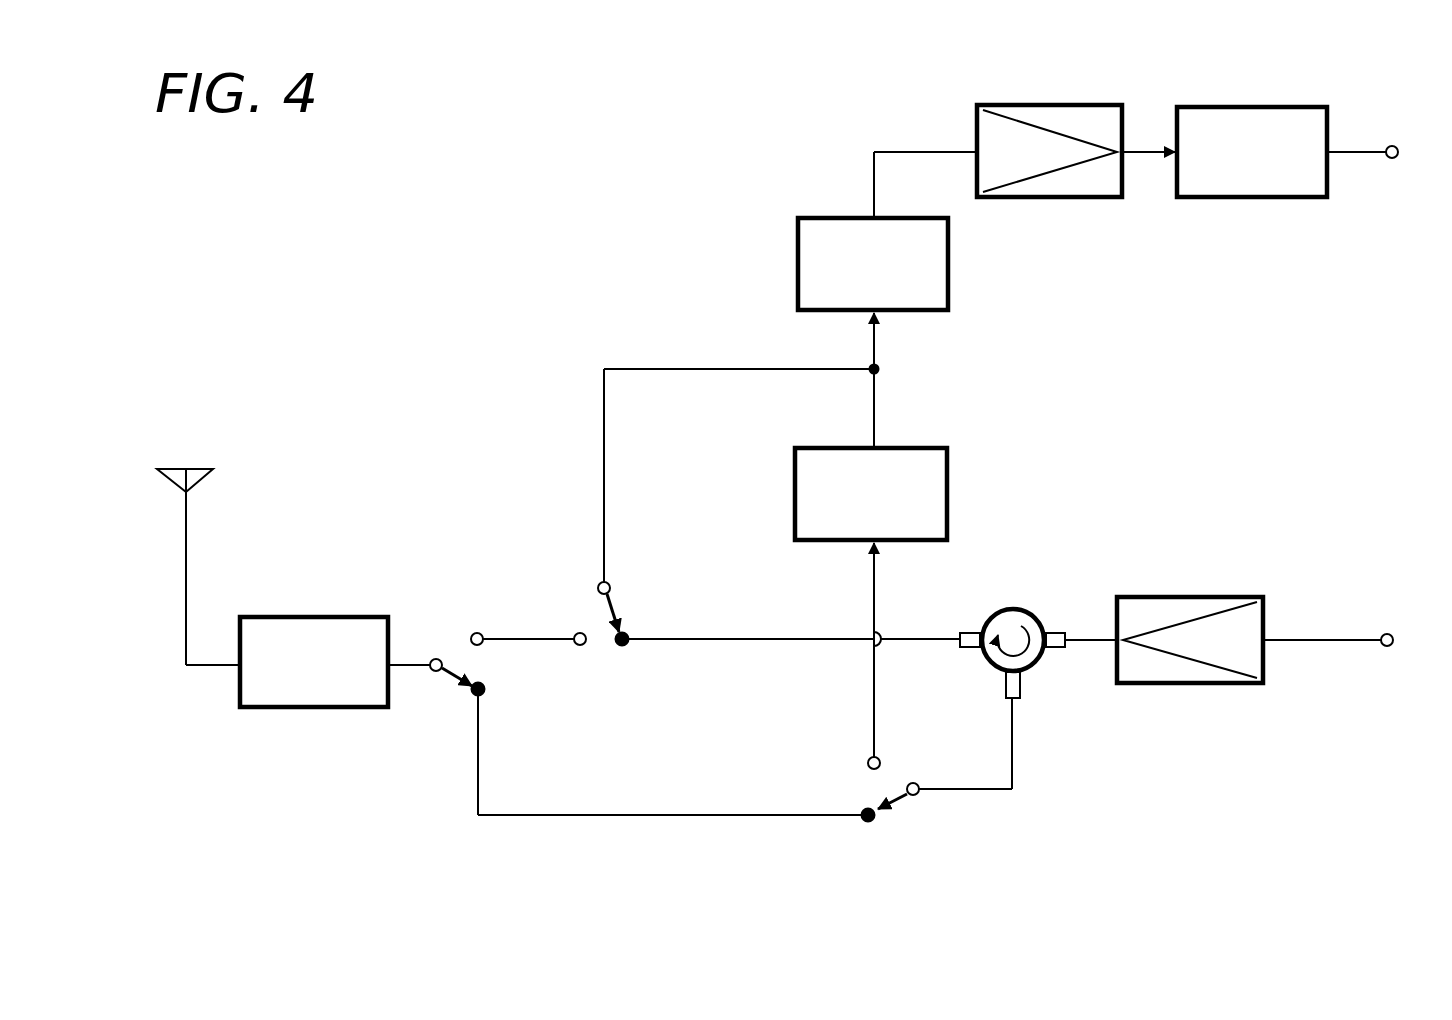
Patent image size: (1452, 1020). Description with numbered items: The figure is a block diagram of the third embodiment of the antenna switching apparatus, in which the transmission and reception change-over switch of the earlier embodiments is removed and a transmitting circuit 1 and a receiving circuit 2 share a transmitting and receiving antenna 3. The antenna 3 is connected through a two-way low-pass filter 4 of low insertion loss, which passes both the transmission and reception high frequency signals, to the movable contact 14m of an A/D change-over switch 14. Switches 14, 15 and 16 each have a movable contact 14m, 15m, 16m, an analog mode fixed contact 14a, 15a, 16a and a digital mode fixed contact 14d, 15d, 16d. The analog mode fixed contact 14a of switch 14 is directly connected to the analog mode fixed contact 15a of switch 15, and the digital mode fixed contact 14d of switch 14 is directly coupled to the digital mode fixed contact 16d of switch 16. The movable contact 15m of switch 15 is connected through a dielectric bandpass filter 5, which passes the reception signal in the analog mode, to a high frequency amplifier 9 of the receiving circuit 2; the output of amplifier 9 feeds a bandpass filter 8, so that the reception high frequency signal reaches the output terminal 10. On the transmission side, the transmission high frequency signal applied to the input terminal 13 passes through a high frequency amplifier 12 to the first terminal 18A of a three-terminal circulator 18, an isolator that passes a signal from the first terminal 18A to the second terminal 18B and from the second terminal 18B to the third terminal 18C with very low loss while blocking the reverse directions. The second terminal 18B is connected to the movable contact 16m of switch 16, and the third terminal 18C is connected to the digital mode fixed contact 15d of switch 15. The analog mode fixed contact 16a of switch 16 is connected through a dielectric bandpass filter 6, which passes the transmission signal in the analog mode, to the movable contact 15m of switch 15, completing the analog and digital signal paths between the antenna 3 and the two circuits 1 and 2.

The transmitting circuit 1 is at (1040, 541).
The receiving circuit 2 is at (1041, 268).
The transmitting and receiving antenna 3 is at (200, 469).
The two-way low-pass filter 4 is at (310, 617).
The dielectric bandpass filter 5 is at (930, 312).
The dielectric bandpass filter 6 is at (933, 448).
The bandpass filter 8 is at (1236, 105).
The high frequency amplifier 9 is at (1041, 105).
The output terminal 10 is at (1390, 147).
The high frequency amplifier 12 is at (1195, 597).
The input terminal 13 is at (1387, 632).
The A/D change-over switch 14 is at (456, 641).
The analog mode fixed contact 14a is at (476, 632).
The movable contact 14m is at (436, 672).
The digital mode fixed contact 14d is at (484, 694).
The A/D change-over switch 15 is at (585, 610).
The analog mode fixed contact 15a is at (580, 646).
The movable contact 15m is at (610, 585).
The digital mode fixed contact 15d is at (623, 647).
The A/D change-over switch 16 is at (902, 813).
The analog mode fixed contact 16a is at (865, 759).
The movable contact 16m is at (911, 781).
The digital mode fixed contact 16d is at (860, 822).
The 3-terminal circulator 18 is at (1040, 668).
The first terminal 18A is at (1051, 631).
The second terminal 18B is at (997, 686).
The third terminal 18C is at (968, 633).